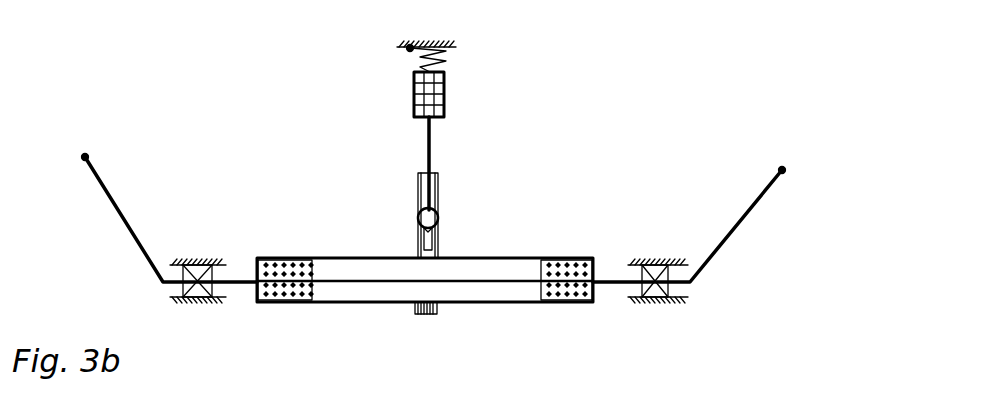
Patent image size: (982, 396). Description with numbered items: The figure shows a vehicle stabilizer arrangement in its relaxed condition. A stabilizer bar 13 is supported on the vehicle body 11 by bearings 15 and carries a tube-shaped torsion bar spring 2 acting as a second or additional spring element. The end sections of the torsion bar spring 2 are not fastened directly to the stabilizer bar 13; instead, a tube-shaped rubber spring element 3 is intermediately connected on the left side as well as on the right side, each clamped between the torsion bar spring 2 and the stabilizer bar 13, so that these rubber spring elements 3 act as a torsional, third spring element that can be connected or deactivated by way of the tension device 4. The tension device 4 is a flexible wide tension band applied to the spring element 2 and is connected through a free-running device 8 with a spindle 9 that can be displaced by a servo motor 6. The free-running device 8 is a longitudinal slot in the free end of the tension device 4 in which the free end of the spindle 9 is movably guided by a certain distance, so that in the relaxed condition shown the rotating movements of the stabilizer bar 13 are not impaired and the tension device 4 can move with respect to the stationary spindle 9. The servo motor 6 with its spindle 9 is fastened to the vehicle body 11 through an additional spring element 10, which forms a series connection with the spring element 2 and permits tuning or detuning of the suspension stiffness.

The tube-shaped torsion bar spring 2 is at (351, 257).
The tube-shaped rubber spring element 3 is at (295, 302).
The tension device 4 is at (418, 312).
The servo motor 6 is at (436, 97).
The free-running device 8 is at (436, 227).
The spindle 9 is at (427, 143).
The additional spring element 10 is at (440, 55).
The vehicle body 11 is at (411, 46).
The stabilizer bar 13 is at (123, 210).
The bearing 15 is at (205, 293).